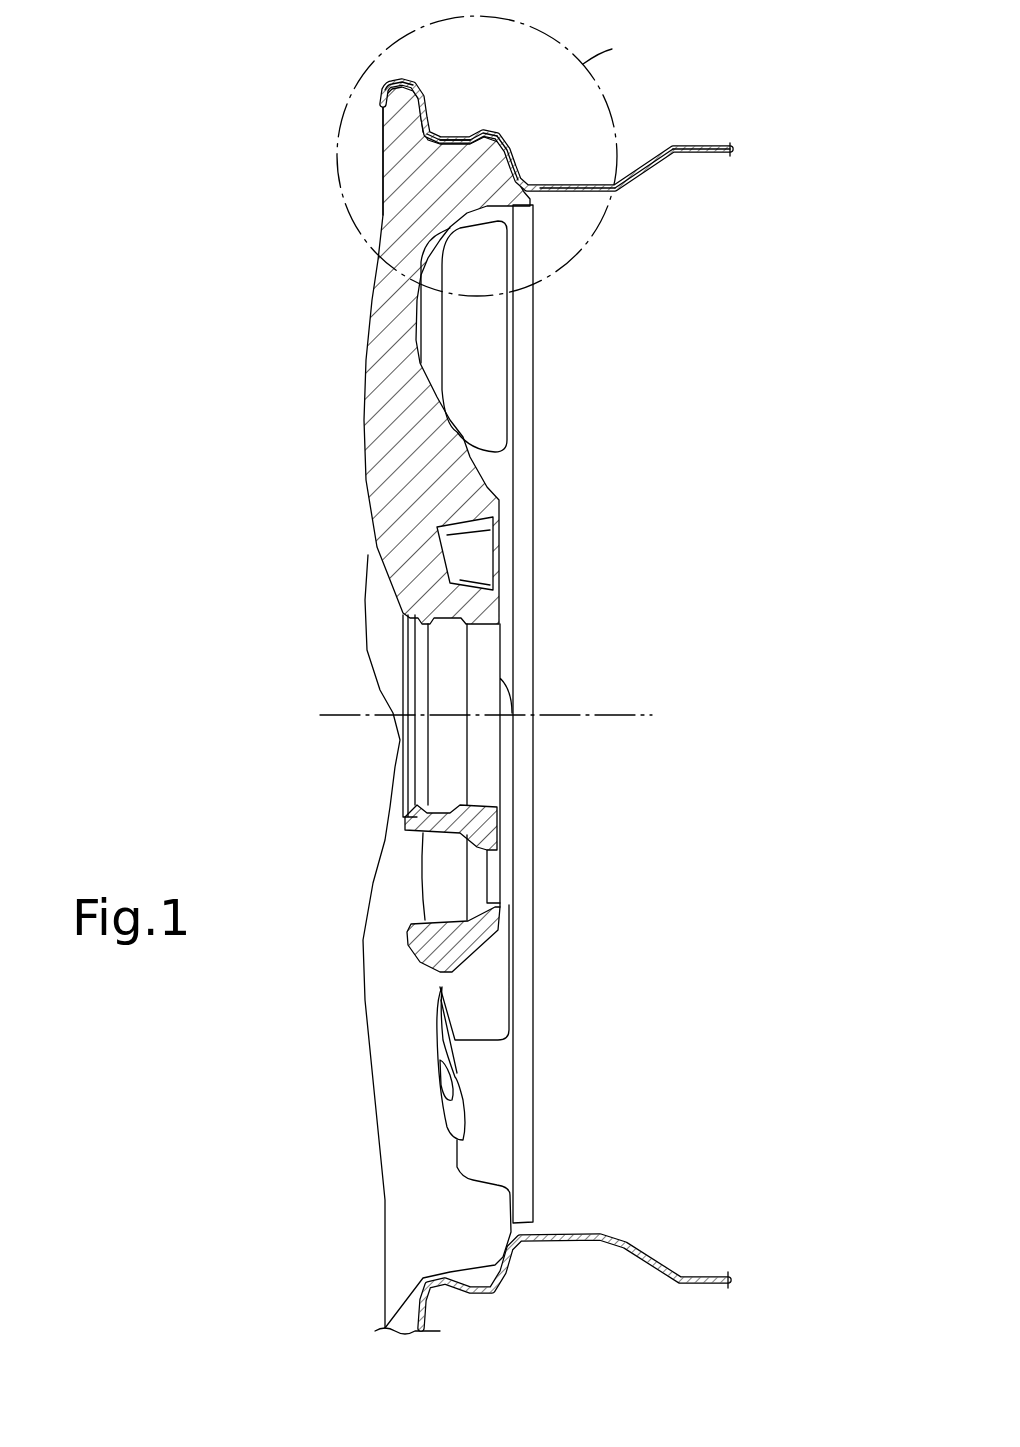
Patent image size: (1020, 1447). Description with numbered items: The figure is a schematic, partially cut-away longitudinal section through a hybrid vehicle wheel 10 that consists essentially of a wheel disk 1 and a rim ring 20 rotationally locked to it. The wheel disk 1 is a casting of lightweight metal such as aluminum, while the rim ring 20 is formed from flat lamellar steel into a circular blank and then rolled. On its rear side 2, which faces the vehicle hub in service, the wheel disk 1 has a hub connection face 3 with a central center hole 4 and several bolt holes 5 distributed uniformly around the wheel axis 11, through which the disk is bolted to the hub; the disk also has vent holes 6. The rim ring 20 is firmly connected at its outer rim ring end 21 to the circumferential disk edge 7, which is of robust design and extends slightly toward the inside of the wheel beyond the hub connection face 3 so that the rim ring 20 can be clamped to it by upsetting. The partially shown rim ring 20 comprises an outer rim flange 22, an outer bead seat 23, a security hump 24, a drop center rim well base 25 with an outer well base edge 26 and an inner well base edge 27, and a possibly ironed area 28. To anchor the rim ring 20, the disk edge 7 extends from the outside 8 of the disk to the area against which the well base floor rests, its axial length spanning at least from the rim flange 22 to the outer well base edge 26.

The wheel disk 1 is at (414, 355).
The rear side 2 is at (535, 447).
The hub connection face 3 is at (522, 612).
The center hole 4 is at (482, 667).
The bolt holes 5 is at (493, 863).
The vent holes 6 is at (400, 1095).
The disk edge 7 is at (423, 157).
The outside of the disk 8 is at (373, 282).
The vehicle wheel 10 is at (272, 390).
The wheel axis 11 is at (622, 712).
The rim ring 20 is at (687, 127).
The outer rim ring end 21 is at (481, 75).
The outer rim flange 22 is at (404, 92).
The outer bead seat 23 is at (452, 133).
The security hump 24 is at (487, 137).
The drop center rim well base 25 is at (575, 183).
The outer well base edge 26 is at (517, 157).
The inner well base edge 27 is at (640, 167).
The ironed area 28 is at (705, 155).